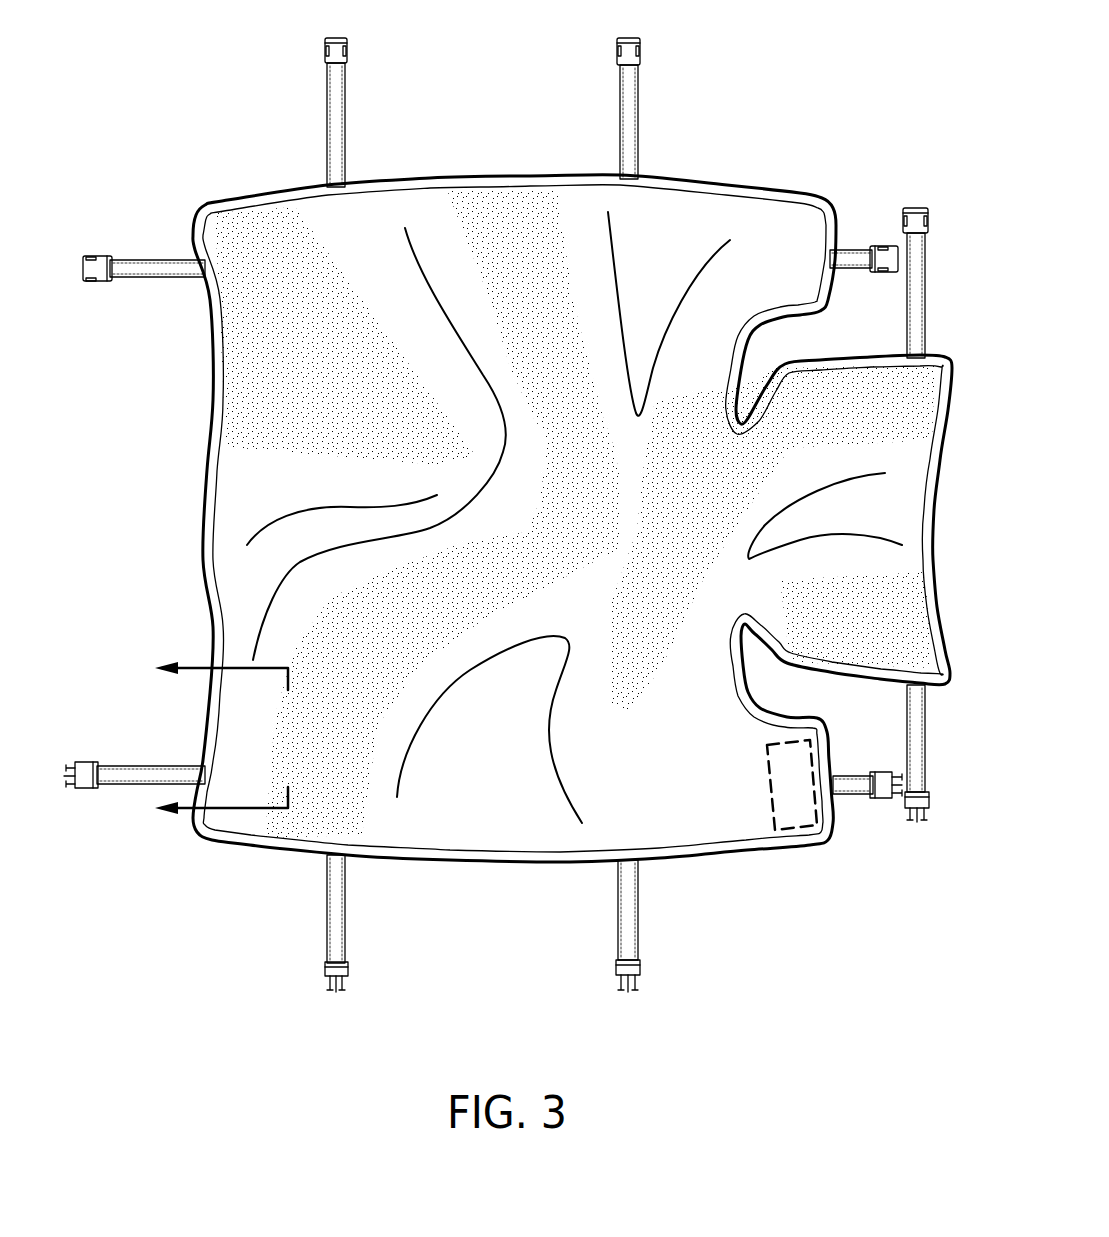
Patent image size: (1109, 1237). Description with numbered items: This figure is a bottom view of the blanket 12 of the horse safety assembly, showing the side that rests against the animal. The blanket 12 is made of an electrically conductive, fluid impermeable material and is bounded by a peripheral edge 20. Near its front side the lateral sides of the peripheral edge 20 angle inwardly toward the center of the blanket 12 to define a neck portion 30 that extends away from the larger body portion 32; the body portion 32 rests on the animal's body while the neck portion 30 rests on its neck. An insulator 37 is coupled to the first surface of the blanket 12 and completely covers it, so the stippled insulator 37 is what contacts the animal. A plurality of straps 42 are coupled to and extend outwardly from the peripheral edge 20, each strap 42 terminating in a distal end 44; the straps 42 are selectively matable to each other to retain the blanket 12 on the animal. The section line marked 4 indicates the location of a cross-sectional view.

The blanket 12 is at (565, 177).
The peripheral edge 20 is at (727, 188).
The neck portion 30 is at (948, 535).
The body portion 32 is at (468, 170).
The insulator 37 is at (275, 215).
The straps 42 is at (622, 98).
The distal end 44 is at (325, 58).
The section line 4- 4 is at (209, 740).